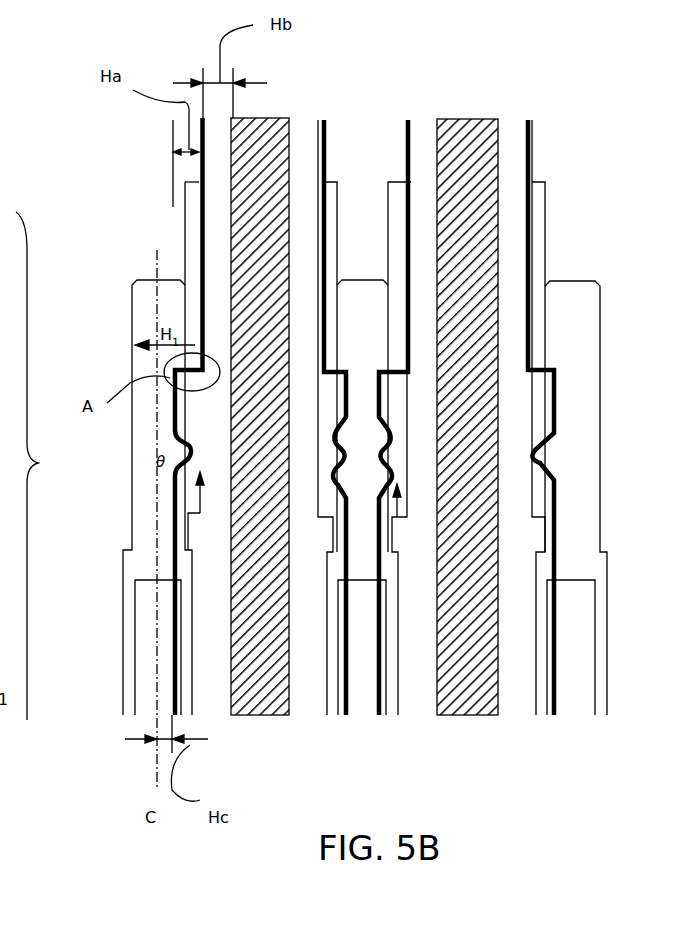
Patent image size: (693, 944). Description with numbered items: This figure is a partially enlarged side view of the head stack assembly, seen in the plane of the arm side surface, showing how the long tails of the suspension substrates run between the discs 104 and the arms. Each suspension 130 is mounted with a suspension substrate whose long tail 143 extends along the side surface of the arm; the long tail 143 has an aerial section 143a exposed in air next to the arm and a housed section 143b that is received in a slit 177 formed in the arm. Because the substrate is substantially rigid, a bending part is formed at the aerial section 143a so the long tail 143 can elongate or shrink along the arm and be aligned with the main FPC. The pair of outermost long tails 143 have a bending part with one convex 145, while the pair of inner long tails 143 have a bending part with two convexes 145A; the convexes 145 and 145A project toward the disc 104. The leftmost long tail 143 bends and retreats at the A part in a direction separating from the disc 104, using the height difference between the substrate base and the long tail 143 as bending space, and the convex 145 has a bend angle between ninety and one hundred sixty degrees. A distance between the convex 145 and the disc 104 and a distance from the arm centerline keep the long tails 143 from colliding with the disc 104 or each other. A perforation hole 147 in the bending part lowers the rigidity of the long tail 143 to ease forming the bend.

The disc 104 is at (268, 712).
The suspension 130 is at (190, 232).
The long tail 143 is at (530, 155).
The aerial section 143a is at (331, 497).
The housed section 143b is at (0, 737).
The convex 145 is at (200, 522).
The convexes 145A is at (400, 520).
The perforation hole 147 is at (0, 366).
The slit 177 is at (145, 625).